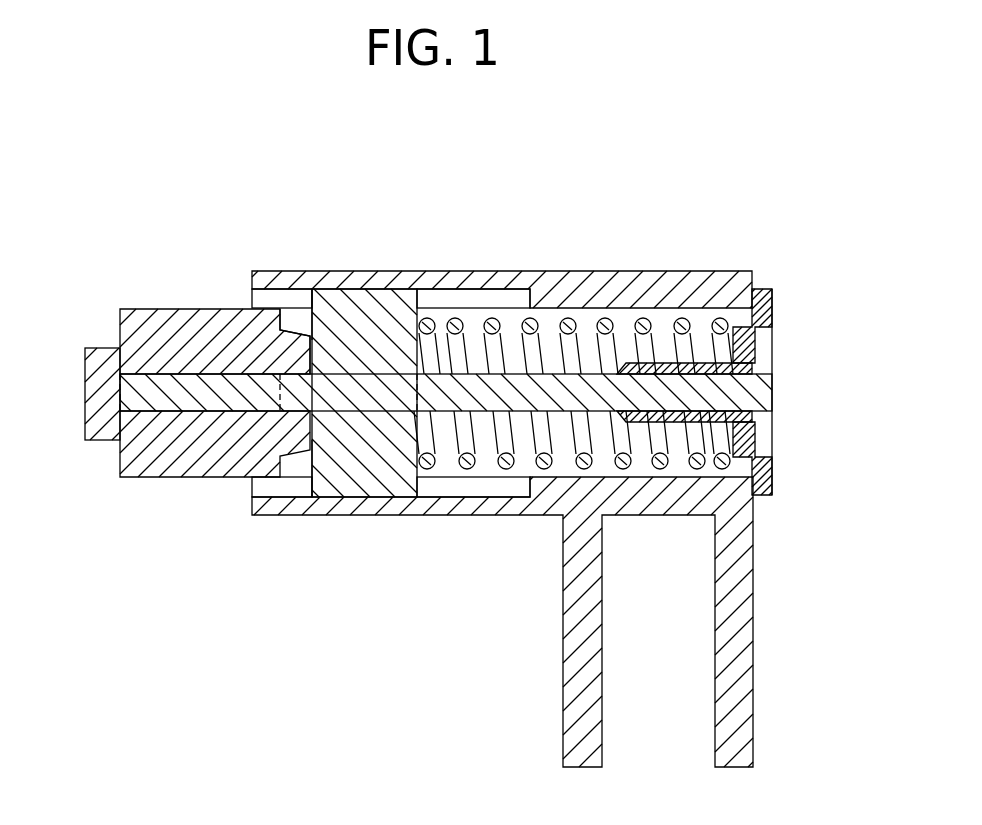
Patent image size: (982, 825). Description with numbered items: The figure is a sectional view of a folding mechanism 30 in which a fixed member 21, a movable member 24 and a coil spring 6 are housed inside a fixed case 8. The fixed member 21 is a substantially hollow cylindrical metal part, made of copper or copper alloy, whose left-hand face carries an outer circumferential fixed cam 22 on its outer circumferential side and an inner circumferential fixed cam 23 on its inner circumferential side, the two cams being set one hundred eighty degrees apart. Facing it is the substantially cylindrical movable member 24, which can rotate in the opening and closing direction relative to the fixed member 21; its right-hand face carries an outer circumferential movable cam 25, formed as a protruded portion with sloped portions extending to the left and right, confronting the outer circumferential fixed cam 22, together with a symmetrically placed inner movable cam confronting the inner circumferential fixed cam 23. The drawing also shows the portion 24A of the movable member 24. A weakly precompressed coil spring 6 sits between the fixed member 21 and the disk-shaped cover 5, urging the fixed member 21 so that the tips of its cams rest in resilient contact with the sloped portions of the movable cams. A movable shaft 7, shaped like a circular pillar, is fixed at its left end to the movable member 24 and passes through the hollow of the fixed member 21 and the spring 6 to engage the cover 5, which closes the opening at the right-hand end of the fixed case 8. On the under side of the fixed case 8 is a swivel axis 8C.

The folding mechanism 30 is at (779, 283).
The fixed case 8 is at (698, 271).
The swivel axis 8C is at (757, 697).
The fixed member 21 is at (375, 310).
The outer circumferential fixed cam 22 is at (293, 323).
The inner circumferential fixed cam 23 is at (308, 430).
The slider arm 24A is at (142, 328).
The outer circumferential movable cam 25 is at (285, 357).
The movable member 24 is at (215, 477).
The movable shaft 7 is at (96, 441).
The coil spring 6 is at (607, 322).
The cover 5 is at (773, 488).